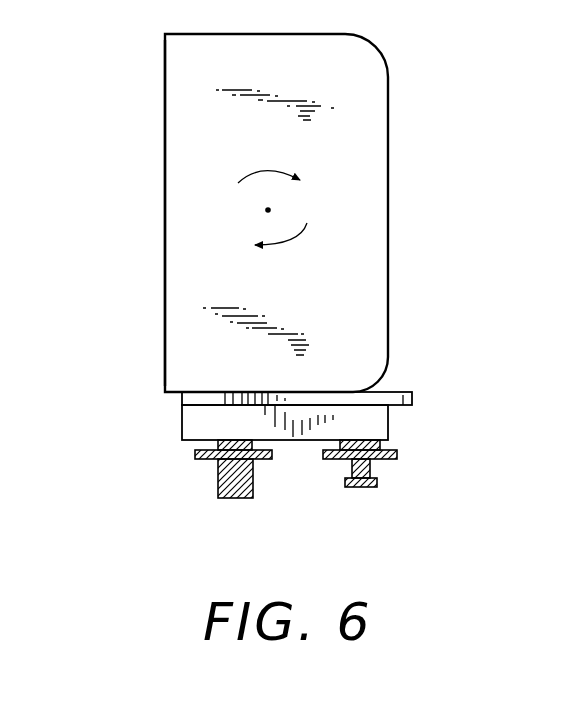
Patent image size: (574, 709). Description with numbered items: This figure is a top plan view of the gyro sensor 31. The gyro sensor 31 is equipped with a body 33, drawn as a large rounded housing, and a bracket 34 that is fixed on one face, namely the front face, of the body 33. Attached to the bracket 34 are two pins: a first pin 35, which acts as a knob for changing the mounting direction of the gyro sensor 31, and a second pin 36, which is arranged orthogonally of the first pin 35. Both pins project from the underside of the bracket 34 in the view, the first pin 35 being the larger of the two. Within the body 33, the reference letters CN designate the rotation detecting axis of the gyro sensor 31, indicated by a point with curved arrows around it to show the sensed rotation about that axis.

The gyro sensor 31 is at (399, 222).
The body 33 is at (174, 188).
The bracket 34 is at (182, 423).
The first pin 35 is at (218, 470).
The second pin 36 is at (346, 478).
The rotation detecting axis CN is at (274, 210).